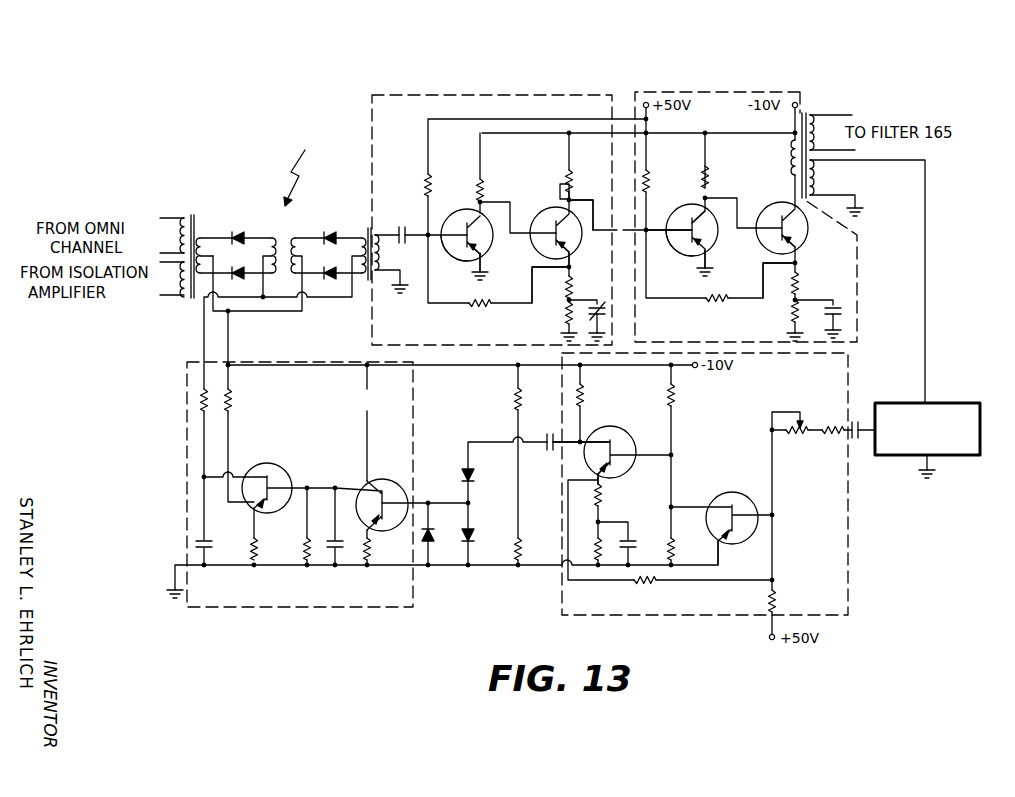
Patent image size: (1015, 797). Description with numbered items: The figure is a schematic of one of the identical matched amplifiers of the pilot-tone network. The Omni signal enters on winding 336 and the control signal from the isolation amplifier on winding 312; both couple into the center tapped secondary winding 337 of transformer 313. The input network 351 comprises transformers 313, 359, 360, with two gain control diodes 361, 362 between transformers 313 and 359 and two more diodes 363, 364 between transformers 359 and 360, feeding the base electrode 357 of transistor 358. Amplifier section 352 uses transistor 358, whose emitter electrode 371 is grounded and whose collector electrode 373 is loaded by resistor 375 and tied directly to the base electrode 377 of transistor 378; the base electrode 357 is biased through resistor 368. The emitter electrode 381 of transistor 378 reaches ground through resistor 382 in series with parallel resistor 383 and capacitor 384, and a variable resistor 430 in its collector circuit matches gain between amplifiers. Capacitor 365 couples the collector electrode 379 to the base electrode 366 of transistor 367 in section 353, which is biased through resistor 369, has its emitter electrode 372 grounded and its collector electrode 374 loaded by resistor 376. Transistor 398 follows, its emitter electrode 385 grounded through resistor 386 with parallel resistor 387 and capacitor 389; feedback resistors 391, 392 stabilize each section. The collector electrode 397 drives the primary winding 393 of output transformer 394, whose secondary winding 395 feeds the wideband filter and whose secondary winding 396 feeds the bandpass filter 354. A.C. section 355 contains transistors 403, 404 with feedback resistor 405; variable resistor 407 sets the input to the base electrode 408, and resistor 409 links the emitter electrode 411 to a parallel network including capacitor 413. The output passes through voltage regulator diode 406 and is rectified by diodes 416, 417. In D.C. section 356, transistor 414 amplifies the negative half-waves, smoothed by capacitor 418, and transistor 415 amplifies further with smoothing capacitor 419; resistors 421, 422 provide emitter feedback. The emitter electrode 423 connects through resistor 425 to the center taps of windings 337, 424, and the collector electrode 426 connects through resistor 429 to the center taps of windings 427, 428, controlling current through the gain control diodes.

The winding 312 is at (184, 297).
The transformer 313 is at (196, 210).
The winding 336 is at (178, 218).
The center tapped secondary winding 337 is at (215, 231).
The input network 351 is at (300, 172).
The feedback transistorized amplifier section 352 is at (372, 125).
The feedback transistorized amplifier section 353 is at (687, 92).
The bandpass filter 354 is at (946, 403).
The A.C. amplifier section 355 is at (690, 615).
The D.C. amplifier section 356 is at (187, 467).
The base electrode 357 is at (455, 258).
The transistor 358 is at (448, 210).
The transformer 359 is at (272, 238).
The transformer 360 is at (376, 228).
The diode 361 is at (238, 232).
The diode 362 is at (238, 279).
The diode 363 is at (324, 232).
The diode 364 is at (334, 283).
The capacitor 365 is at (604, 220).
The base electrode 366 is at (677, 250).
The transistor 367 is at (694, 204).
The resistor 368 is at (412, 185).
The resistor 369 is at (650, 182).
The emitter electrode 371 is at (482, 266).
The emitter electrode 372 is at (709, 256).
The collector electrode 373 is at (484, 250).
The collector electrode 374 is at (690, 218).
The resistor 375 is at (478, 188).
The resistor 376 is at (708, 180).
The base electrode 377 is at (530, 218).
The transistor 378 is at (550, 284).
The collector electrode 379 is at (574, 248).
The emitter electrode 381 is at (572, 260).
The resistor 382 is at (573, 284).
The resistor 383 is at (566, 314).
The capacitor 384 is at (606, 308).
The emitter electrode 385 is at (796, 250).
The resistor 386 is at (799, 281).
The resistor 387 is at (792, 311).
The capacitor 389 is at (842, 305).
The resistor 391 is at (484, 309).
The resistor 392 is at (720, 302).
The primary winding 393 is at (790, 157).
The output transformer 394 is at (806, 113).
The secondary winding 395 is at (832, 132).
The secondary winding 396 is at (867, 281).
The collector electrode 397 is at (782, 204).
The transistor 398 is at (763, 268).
The transistor 403 is at (748, 486).
The transistor 404 is at (630, 418).
The feedback resistor 405 is at (652, 584).
The voltage regulator diode 406 is at (462, 475).
The variable resistor 407 is at (796, 434).
The base electrode 408 is at (738, 526).
The resistor 409 is at (602, 500).
The emitter electrode 411 is at (602, 480).
The capacitor 413 is at (634, 542).
The transistor 414 is at (390, 471).
The transistor 415 is at (270, 478).
The diode 416 is at (464, 540).
The diode 417 is at (434, 536).
The capacitor 418 is at (332, 552).
The capacitor 419 is at (194, 544).
The resistor 421 is at (372, 548).
The resistor 422 is at (258, 545).
The emitter electrode 423 is at (252, 506).
The winding 424 is at (298, 246).
The resistor 425 is at (234, 404).
The collector electrode 426 is at (238, 474).
The winding 427 is at (266, 252).
The winding 428 is at (285, 304).
The resistor 429 is at (196, 414).
The variable resistor 430 is at (566, 181).